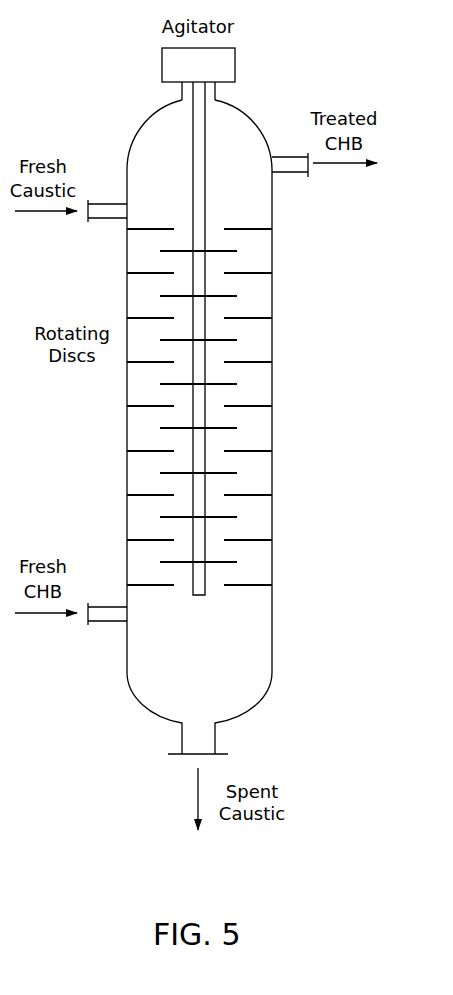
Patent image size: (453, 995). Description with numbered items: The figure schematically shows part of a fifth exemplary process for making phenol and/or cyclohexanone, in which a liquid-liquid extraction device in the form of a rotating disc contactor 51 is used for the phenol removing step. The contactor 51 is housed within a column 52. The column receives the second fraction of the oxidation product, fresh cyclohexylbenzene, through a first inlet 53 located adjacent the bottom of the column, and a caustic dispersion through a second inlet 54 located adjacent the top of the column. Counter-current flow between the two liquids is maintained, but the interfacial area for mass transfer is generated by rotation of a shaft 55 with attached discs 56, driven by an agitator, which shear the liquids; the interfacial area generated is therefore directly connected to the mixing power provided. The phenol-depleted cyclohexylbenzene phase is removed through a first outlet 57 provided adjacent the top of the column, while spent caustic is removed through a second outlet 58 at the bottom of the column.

The rotating disc contactor 51 is at (203, 427).
The column 52 is at (127, 431).
The first inlet 53 is at (106, 622).
The second inlet 54 is at (107, 220).
The shaft 55 is at (192, 128).
The discs 56 is at (175, 385).
The first outlet 57 is at (288, 173).
The second outlet 58 is at (182, 731).